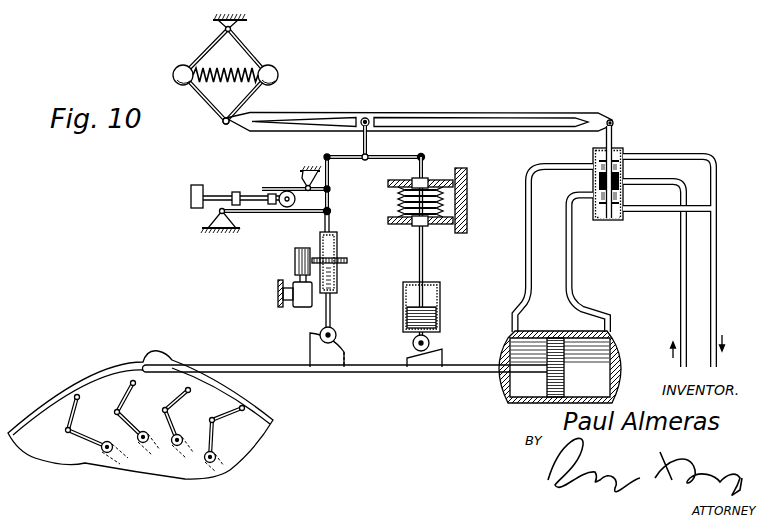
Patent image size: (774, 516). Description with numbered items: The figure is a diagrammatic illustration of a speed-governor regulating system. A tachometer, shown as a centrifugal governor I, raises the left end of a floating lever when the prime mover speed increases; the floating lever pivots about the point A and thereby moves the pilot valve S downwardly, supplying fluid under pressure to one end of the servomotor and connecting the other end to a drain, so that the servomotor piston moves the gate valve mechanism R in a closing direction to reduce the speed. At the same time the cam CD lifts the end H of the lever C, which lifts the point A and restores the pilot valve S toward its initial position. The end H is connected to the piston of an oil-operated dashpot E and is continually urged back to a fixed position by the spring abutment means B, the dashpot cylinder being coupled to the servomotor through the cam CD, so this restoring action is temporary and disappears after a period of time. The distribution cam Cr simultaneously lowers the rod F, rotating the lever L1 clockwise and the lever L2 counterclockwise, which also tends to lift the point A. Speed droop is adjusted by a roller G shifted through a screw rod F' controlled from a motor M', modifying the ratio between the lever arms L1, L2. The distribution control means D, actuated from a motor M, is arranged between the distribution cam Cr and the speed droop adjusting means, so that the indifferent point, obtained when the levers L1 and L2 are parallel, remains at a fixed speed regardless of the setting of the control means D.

The centrifugal governor I is at (256, 49).
The point A of the floating lever A is at (366, 118).
The lever C is at (402, 156).
The end H of lever C H is at (425, 156).
The pilot valve S is at (622, 147).
The spring abutment means B is at (452, 238).
The oil-operated dashpot E is at (441, 318).
The distribution control means D is at (295, 257).
The rod F is at (337, 277).
The motor M is at (293, 311).
The screw rod F' is at (233, 180).
The motor M' is at (180, 198).
The lever L1 is at (282, 213).
The lever L2 is at (281, 184).
The roller G is at (285, 201).
The gate valve mechanism R is at (138, 361).
The distribution cam Cr is at (323, 364).
The cam CD is at (418, 364).